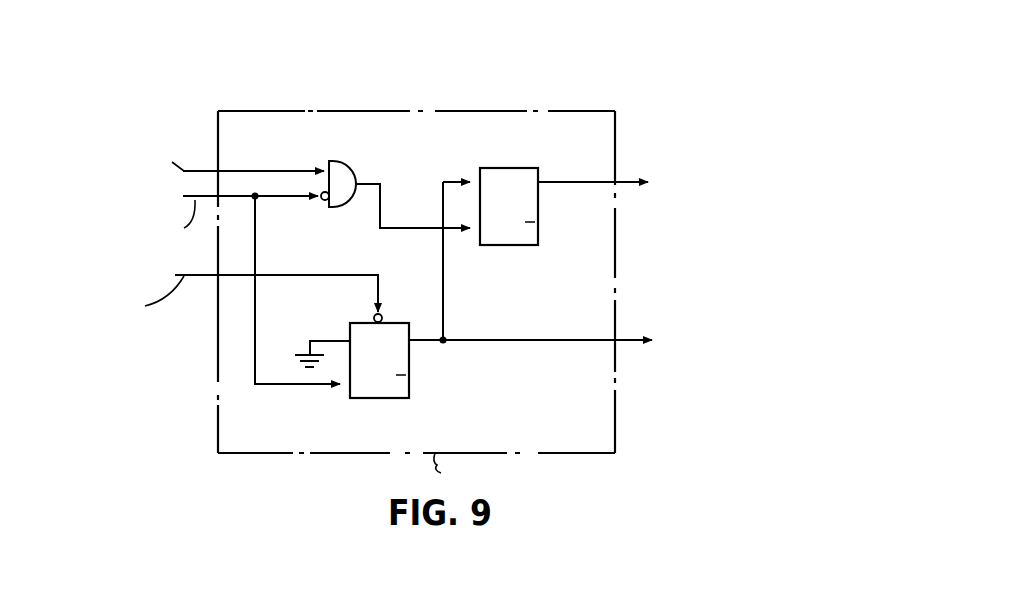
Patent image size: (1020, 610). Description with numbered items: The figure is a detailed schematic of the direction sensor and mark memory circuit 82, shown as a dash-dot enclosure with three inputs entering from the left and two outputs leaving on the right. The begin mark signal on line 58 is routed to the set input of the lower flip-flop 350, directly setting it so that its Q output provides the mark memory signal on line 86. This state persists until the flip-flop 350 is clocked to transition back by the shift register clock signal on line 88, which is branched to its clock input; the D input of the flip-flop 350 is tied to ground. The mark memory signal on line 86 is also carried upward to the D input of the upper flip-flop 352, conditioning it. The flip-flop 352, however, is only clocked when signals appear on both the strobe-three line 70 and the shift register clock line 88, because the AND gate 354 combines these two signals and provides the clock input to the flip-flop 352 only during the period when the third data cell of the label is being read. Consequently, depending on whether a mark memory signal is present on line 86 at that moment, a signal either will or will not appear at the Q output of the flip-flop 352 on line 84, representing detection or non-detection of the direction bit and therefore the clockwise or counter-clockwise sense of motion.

The direction sensor and mark memory circuit 82 is at (618, 424).
The strobe-3 line 70 is at (204, 170).
The shift register clock line 88 is at (196, 196).
The begin mark line 58 is at (206, 275).
The AND gate 354 is at (345, 165).
The flip-flop 352 is at (538, 207).
The flip-flop 350 is at (409, 368).
The direction signal line 84 is at (621, 181).
The mark memory line 86 is at (622, 339).